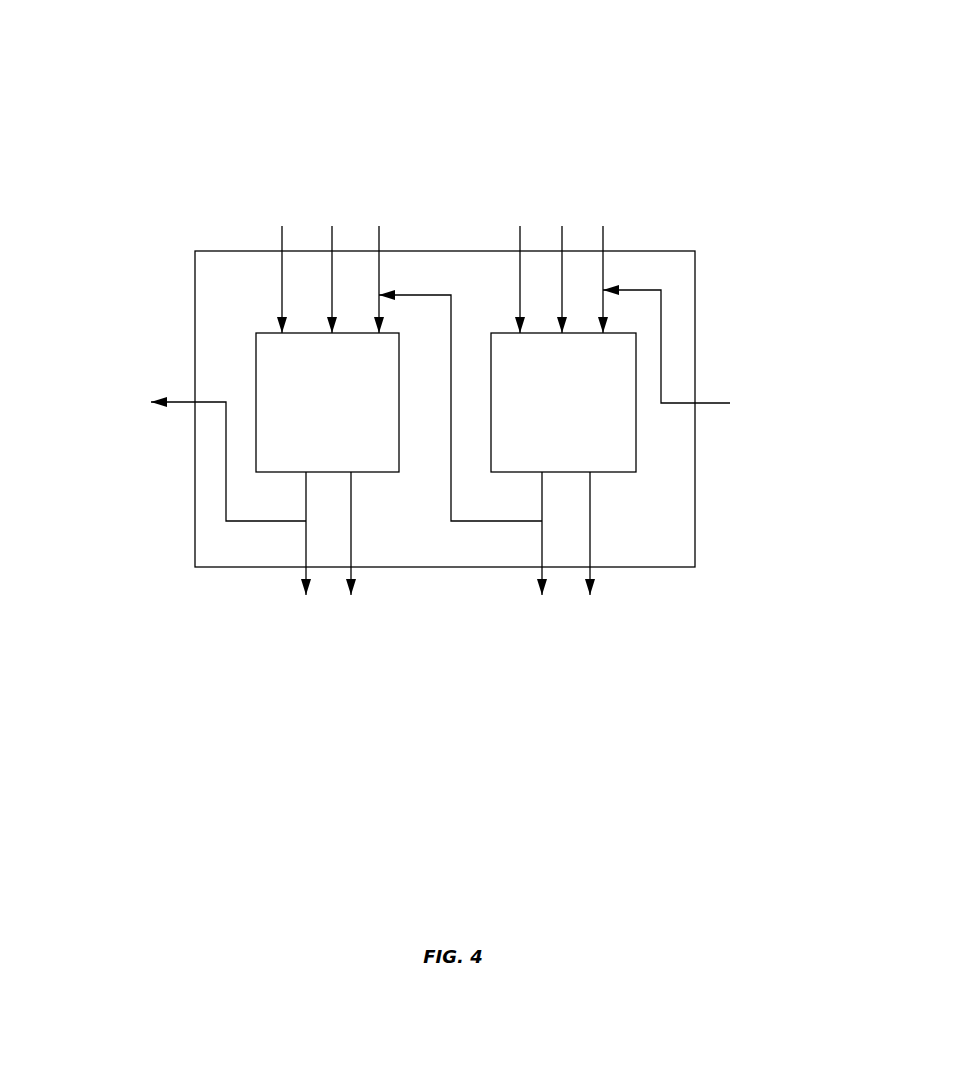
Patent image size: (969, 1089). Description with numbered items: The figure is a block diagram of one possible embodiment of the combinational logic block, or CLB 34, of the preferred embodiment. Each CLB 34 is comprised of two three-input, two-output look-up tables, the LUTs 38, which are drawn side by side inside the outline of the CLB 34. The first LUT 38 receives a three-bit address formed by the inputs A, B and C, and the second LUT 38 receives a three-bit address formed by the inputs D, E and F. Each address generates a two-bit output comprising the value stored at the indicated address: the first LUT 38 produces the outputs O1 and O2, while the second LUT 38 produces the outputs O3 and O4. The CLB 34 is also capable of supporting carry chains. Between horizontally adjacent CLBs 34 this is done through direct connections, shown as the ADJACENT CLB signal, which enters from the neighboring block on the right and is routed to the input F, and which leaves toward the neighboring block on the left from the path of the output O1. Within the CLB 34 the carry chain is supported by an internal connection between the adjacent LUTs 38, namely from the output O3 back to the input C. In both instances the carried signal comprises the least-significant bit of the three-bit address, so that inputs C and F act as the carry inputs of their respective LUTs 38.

The CLB 34 is at (230, 128).
The Look-Up Table (LUT) 38 is at (446, 402).
The address input A is at (281, 269).
The address input B is at (332, 269).
The address input C is at (379, 269).
The address input D is at (520, 269).
The address input E is at (562, 269).
The address input F is at (603, 269).
The output O1 is at (309, 547).
The output O2 is at (353, 547).
The output O3 is at (540, 547).
The output O4 is at (593, 547).